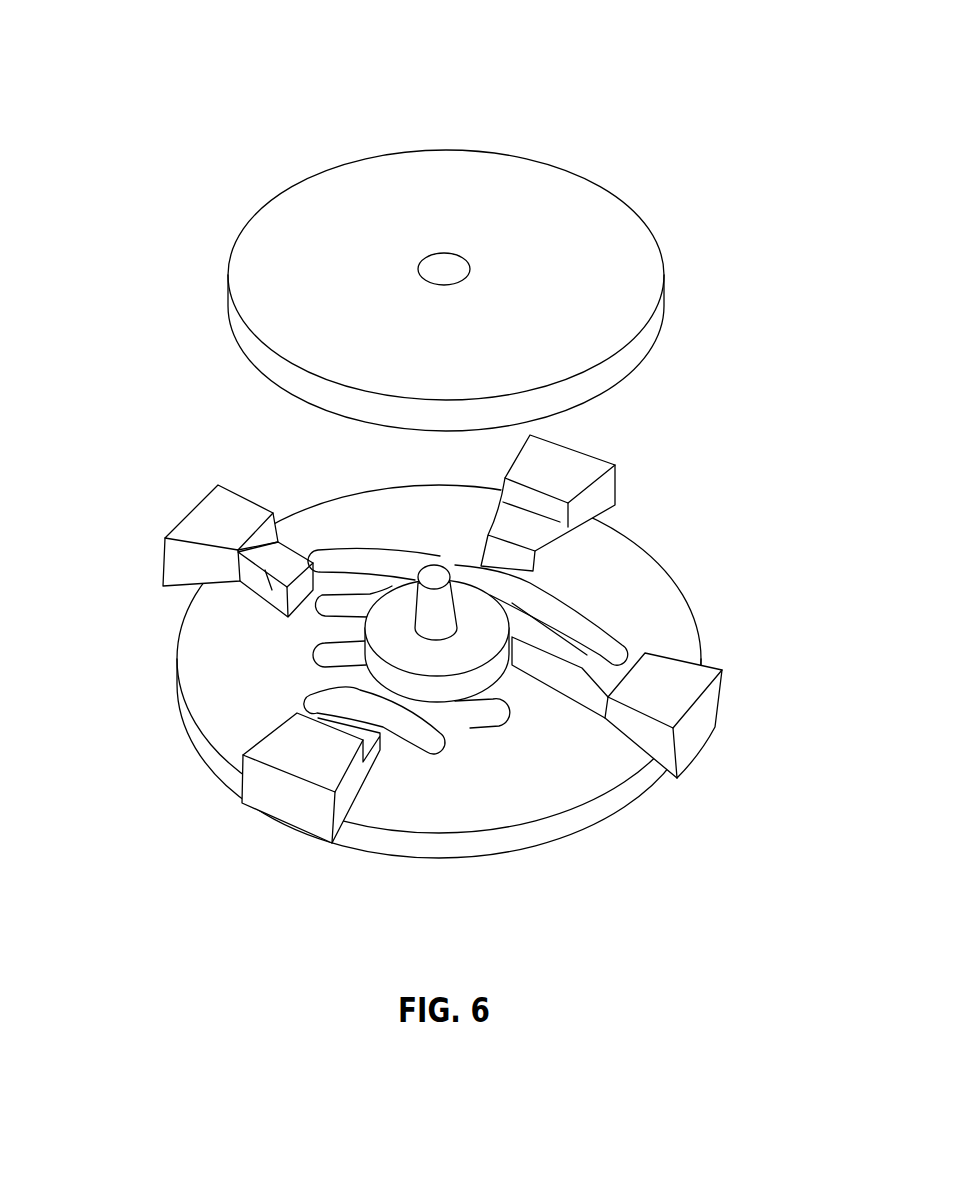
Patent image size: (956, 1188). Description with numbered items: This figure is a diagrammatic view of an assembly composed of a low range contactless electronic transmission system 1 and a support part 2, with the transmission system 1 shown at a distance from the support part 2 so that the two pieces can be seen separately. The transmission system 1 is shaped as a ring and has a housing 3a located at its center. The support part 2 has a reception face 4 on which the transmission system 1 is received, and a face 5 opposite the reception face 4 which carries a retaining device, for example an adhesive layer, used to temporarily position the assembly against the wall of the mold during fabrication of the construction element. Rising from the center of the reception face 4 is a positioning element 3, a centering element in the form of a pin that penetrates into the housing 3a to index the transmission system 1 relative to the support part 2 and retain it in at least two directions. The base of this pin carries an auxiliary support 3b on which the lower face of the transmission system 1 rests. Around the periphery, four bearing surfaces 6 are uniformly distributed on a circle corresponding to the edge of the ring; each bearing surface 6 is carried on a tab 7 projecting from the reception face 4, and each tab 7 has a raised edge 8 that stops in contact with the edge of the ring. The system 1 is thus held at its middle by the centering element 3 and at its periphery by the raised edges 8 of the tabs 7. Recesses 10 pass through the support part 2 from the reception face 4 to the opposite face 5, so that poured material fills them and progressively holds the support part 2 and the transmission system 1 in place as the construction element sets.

The electronic transmission system 1 is at (535, 212).
The support part 2 is at (166, 720).
The positioning element 3 is at (437, 578).
The housing 3a is at (440, 268).
The auxiliary support 3b is at (487, 630).
The reception face 4 is at (660, 617).
The face 5 is at (358, 849).
The bearing surface 6 is at (228, 599).
The tab 7 is at (288, 808).
The raised edge 8 is at (257, 550).
The recess 10 is at (583, 628).